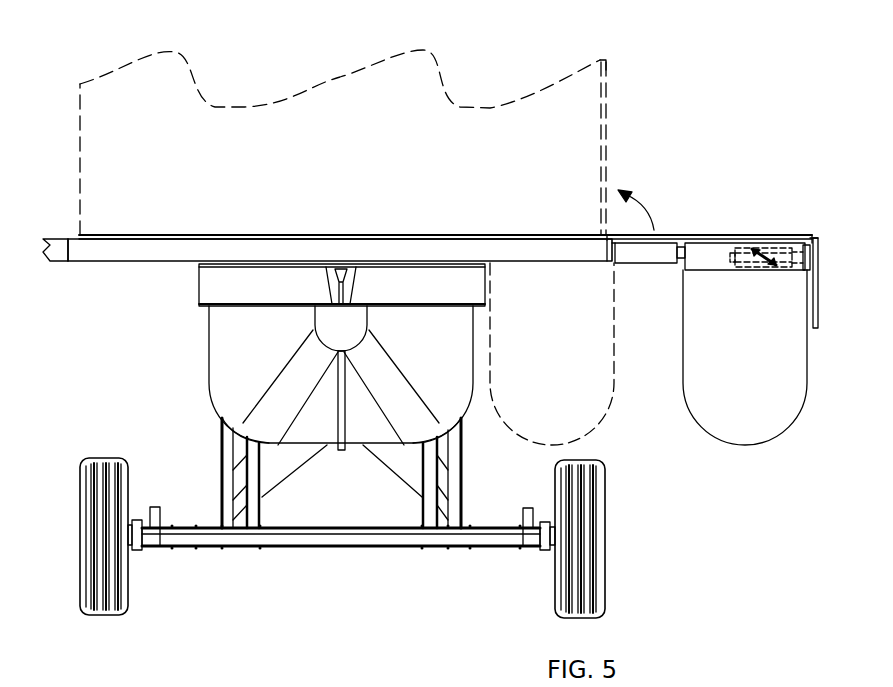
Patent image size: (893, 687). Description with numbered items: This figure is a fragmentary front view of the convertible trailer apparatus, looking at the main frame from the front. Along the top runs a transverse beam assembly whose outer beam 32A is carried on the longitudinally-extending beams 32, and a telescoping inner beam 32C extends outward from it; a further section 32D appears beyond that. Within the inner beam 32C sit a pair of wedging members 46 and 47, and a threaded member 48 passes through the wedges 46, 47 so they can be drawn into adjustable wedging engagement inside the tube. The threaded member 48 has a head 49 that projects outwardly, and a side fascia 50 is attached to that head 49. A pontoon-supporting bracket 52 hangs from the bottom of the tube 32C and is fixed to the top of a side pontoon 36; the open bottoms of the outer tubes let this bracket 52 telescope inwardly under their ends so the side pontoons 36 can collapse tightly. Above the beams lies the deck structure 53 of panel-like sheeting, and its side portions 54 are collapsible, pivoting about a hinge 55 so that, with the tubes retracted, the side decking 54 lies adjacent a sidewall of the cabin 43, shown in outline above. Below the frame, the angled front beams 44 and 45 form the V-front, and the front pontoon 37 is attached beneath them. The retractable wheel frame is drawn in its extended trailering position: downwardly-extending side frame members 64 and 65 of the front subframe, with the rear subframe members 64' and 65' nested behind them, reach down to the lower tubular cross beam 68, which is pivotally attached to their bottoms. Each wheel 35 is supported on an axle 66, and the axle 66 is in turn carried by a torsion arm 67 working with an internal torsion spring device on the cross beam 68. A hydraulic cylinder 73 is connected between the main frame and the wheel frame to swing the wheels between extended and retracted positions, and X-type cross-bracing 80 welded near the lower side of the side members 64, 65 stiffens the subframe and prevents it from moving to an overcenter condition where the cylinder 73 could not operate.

The longitudinally-extending beams 32 is at (96, 262).
The outer beams 32A is at (116, 248).
The inner beam 32C is at (645, 258).
The toolbar extension section 32D is at (698, 268).
The wheels 35 is at (125, 600).
The side pontoons 36 is at (618, 400).
The front pontoon 37 is at (216, 355).
The cabin 43 is at (543, 82).
The angled front beam 44 is at (260, 278).
The angled front beam 45 is at (428, 270).
The wedging member 46 is at (738, 246).
The wedging member 47 is at (765, 248).
The threaded member 48 is at (798, 246).
The head 49 is at (815, 238).
The side fascia 50 is at (819, 285).
The pontoon-supporting bracket 52 is at (753, 270).
The deck structure 53 is at (548, 237).
The side portions of the decking structure 54 is at (683, 237).
The hinge 55 is at (609, 250).
The side frame member 64 is at (470, 473).
The side frame member of rear subframe 64' is at (442, 528).
The side frame member 65 is at (221, 463).
The side frame member of rear subframe 65' is at (274, 528).
The axle 66 is at (130, 520).
The torsion arm 67 is at (137, 550).
The lower tubular cross beam 68 is at (338, 546).
The hydraulic cylinder 73 is at (155, 508).
The X-type cross-bracing 80 is at (298, 467).